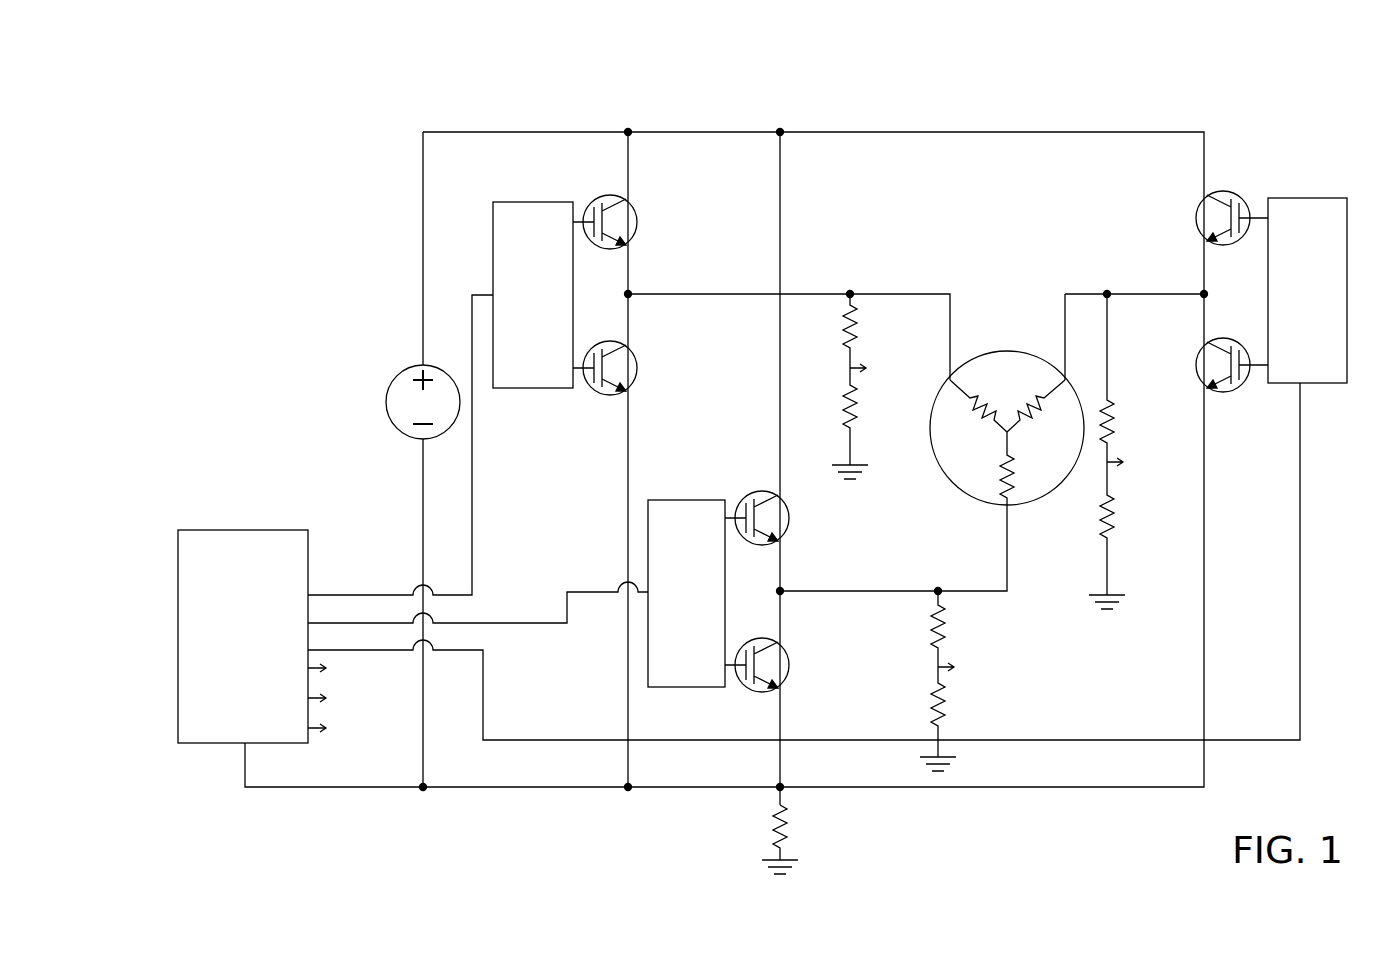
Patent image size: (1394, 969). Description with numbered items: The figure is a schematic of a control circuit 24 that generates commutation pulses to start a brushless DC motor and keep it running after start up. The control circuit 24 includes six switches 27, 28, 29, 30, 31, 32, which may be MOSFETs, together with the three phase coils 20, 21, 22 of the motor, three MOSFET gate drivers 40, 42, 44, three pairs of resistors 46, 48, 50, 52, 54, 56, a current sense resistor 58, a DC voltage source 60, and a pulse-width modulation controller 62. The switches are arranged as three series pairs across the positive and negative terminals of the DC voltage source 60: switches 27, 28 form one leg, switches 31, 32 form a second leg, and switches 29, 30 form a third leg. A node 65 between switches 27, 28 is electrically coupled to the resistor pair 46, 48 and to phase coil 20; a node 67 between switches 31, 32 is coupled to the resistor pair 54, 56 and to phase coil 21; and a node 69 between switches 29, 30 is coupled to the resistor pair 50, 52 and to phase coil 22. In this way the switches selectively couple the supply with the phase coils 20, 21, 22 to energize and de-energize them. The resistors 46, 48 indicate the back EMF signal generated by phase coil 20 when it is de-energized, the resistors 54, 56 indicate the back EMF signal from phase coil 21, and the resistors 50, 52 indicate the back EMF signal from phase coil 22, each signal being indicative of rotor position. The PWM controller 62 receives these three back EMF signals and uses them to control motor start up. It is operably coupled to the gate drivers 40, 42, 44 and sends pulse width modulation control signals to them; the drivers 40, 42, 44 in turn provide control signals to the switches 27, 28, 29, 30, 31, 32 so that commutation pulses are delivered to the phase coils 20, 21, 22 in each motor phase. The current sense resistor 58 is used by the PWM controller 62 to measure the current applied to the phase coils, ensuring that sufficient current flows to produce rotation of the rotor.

The phase coil 20 is at (982, 398).
The phase coil 21 is at (1032, 402).
The phase coil 22 is at (1012, 478).
The control circuit 24 is at (1093, 121).
The switch 27 is at (626, 202).
The switch 28 is at (630, 350).
The switch 29 is at (789, 522).
The switch 30 is at (789, 660).
The switch 31 is at (1236, 196).
The switch 32 is at (1226, 392).
The MOSFET gate driver 40 is at (535, 202).
The MOSFET gate driver 42 is at (700, 500).
The MOSFET gate driver 44 is at (1322, 198).
The resistor 46 is at (857, 336).
The resistor 48 is at (857, 412).
The resistor 50 is at (945, 620).
The resistor 52 is at (945, 706).
The resistor 54 is at (1114, 416).
The resistor 56 is at (1114, 506).
The current sense resistor 58 is at (787, 818).
The DC voltage source 60 is at (404, 370).
The pulse-width modulation controller 62 is at (308, 568).
The node 65 is at (631, 292).
The node 67 is at (1202, 292).
The node 69 is at (782, 589).